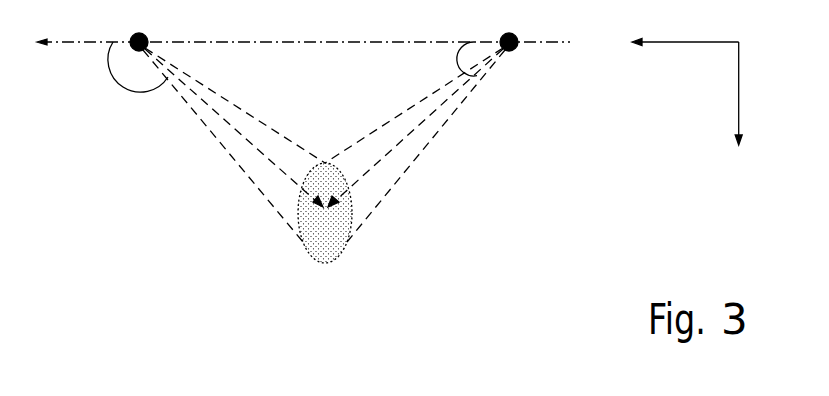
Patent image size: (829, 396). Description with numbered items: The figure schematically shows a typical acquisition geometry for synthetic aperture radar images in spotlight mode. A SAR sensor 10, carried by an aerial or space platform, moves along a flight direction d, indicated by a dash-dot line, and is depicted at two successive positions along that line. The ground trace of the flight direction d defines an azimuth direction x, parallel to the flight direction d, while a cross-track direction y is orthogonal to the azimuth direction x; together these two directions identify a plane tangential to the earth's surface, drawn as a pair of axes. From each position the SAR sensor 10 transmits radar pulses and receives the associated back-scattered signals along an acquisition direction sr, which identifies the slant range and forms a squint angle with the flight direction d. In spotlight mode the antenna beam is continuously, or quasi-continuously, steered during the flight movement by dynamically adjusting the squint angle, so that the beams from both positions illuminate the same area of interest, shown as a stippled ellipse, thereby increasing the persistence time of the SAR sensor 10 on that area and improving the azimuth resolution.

The SAR sensor 10 is at (133, 35).
The flight direction d is at (303, 39).
The azimuth direction x is at (685, 53).
The cross-track direction y is at (727, 100).
The acquisition direction sr is at (324, 128).